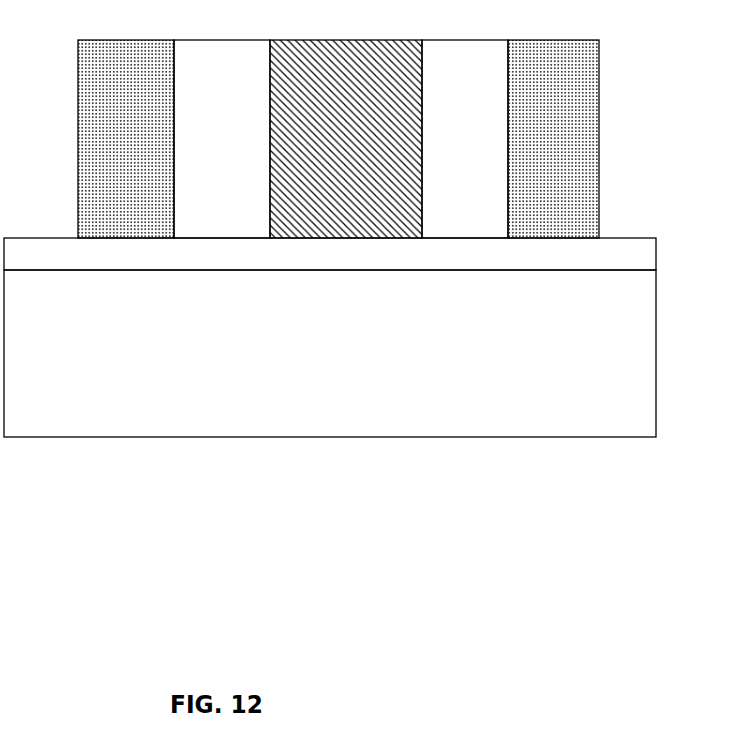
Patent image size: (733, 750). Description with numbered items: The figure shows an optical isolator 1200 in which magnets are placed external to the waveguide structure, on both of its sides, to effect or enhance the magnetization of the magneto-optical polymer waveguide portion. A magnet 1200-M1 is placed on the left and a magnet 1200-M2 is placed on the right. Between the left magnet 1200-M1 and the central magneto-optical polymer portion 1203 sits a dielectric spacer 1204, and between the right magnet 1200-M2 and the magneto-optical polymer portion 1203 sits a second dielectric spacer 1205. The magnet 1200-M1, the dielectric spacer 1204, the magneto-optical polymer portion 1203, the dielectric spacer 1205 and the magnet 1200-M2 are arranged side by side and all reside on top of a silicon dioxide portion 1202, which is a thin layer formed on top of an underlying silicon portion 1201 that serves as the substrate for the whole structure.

The optical isolator 1200 is at (330, 286).
The silicon portion 1201 is at (151, 333).
The silicon dioxide portion 1202 is at (153, 261).
The magneto-optical polymer portion 1203 is at (373, 112).
The dielectric spacer 1204 is at (239, 106).
The dielectric spacer 1205 is at (481, 108).
The magnet 1200-M1 is at (163, 149).
The magnet 1200-M2 is at (590, 149).